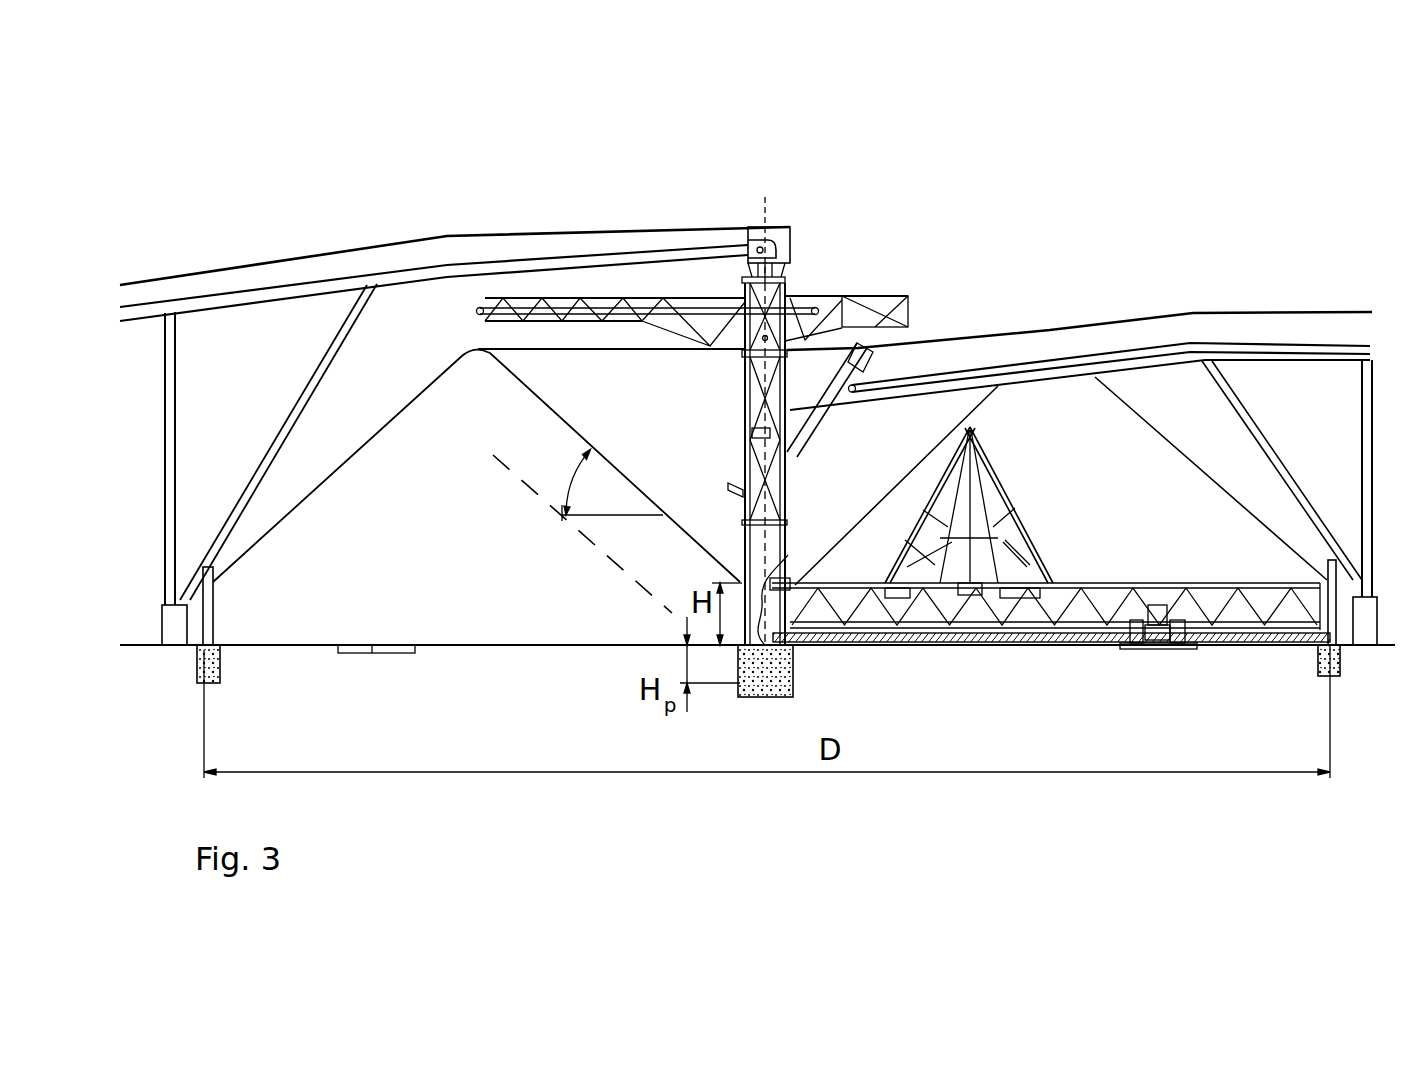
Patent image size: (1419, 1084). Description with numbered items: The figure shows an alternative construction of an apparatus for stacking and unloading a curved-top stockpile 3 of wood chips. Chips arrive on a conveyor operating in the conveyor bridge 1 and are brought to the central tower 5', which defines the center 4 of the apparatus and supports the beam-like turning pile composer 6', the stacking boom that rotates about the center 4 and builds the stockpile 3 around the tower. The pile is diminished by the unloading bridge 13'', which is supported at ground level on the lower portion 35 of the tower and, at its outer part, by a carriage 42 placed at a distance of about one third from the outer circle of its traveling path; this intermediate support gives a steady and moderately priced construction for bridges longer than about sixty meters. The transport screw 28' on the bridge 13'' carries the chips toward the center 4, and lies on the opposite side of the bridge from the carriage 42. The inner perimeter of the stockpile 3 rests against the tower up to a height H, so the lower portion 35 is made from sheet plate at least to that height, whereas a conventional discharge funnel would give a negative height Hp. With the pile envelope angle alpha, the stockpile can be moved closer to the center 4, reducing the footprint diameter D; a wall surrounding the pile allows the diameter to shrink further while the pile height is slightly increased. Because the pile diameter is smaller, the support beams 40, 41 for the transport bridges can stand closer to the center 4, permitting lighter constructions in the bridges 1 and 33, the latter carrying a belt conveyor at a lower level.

The conveyor bridge 1 is at (537, 245).
The curved-top stockpile 3 is at (392, 427).
The center of the tower 4 is at (760, 210).
The central tower 5' is at (719, 445).
The beam-like turning pile composer 6' is at (693, 256).
The unloading bridge 13'' is at (1046, 528).
The transport screw 28' is at (1051, 664).
The bridge 33 is at (997, 347).
The lower portion of the tower 35 is at (754, 454).
The support beam 40 is at (1373, 578).
The support beam 41 is at (176, 597).
The carriage 42 is at (1133, 642).